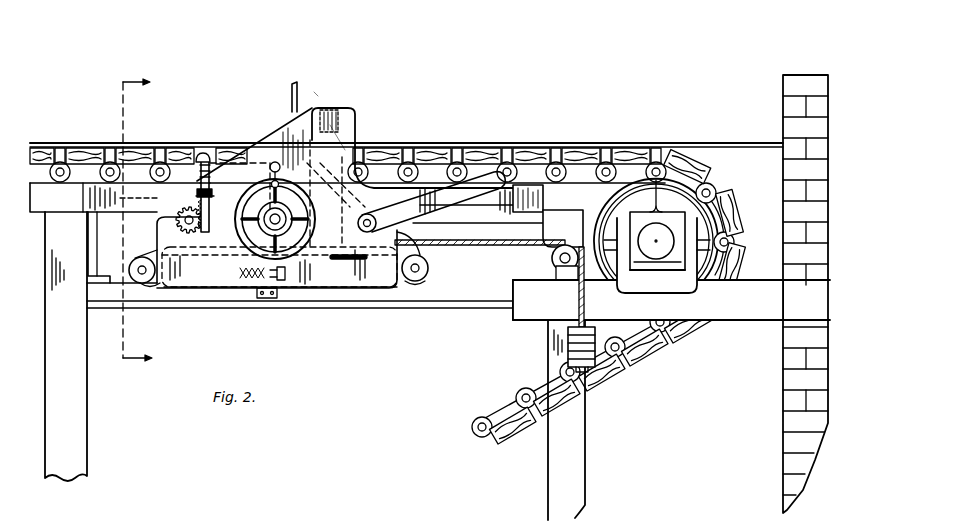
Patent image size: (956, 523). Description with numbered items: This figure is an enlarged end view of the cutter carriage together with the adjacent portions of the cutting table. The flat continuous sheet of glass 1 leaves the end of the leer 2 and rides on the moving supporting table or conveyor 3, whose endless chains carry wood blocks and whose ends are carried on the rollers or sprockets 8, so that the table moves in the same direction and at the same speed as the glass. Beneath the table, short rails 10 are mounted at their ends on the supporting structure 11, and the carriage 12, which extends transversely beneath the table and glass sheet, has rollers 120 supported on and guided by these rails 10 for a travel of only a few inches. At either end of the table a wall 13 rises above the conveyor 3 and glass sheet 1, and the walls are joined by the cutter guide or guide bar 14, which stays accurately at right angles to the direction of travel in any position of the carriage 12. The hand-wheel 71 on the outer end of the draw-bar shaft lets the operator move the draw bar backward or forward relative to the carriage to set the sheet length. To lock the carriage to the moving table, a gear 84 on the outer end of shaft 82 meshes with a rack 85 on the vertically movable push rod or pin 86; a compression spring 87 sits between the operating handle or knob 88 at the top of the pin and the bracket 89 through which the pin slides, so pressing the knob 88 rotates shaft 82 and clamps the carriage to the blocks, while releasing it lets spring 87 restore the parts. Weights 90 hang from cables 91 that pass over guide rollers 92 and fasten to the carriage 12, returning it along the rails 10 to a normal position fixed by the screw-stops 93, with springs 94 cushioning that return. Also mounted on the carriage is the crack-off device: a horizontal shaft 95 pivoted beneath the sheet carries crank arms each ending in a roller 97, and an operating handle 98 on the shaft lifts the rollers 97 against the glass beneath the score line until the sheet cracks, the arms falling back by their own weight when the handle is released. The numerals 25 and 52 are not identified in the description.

The sheet of glass 1 is at (600, 143).
The leer 2 is at (795, 88).
The supporting table or conveyor 3 is at (133, 222).
The rollers or sprockets 8 is at (663, 195).
The rails 10 is at (407, 295).
The supporting structure 11 is at (77, 410).
The carriage 12 is at (322, 277).
The wall 13 is at (340, 143).
The cutter guide or guide bar 14 is at (343, 105).
The lever 25 is at (305, 97).
The slot 52 is at (347, 262).
The hand-wheel 71 is at (253, 183).
The shaft 82 is at (182, 222).
The gear 84 is at (200, 198).
The rack 85 is at (189, 212).
The push rod or pin 86 is at (215, 196).
The compression spring 87 is at (212, 160).
The operating handle or knob 88 is at (203, 153).
The bracket 89 is at (213, 188).
The weights 90 is at (575, 345).
The cables 91 is at (472, 242).
The guide rollers 92 is at (547, 257).
The screw-stops 93 is at (278, 300).
The springs 94 is at (245, 292).
The horizontal shaft 95 is at (370, 214).
The roller 97 is at (317, 92).
The operating handle 98 is at (430, 203).
The rollers 120 is at (142, 283).